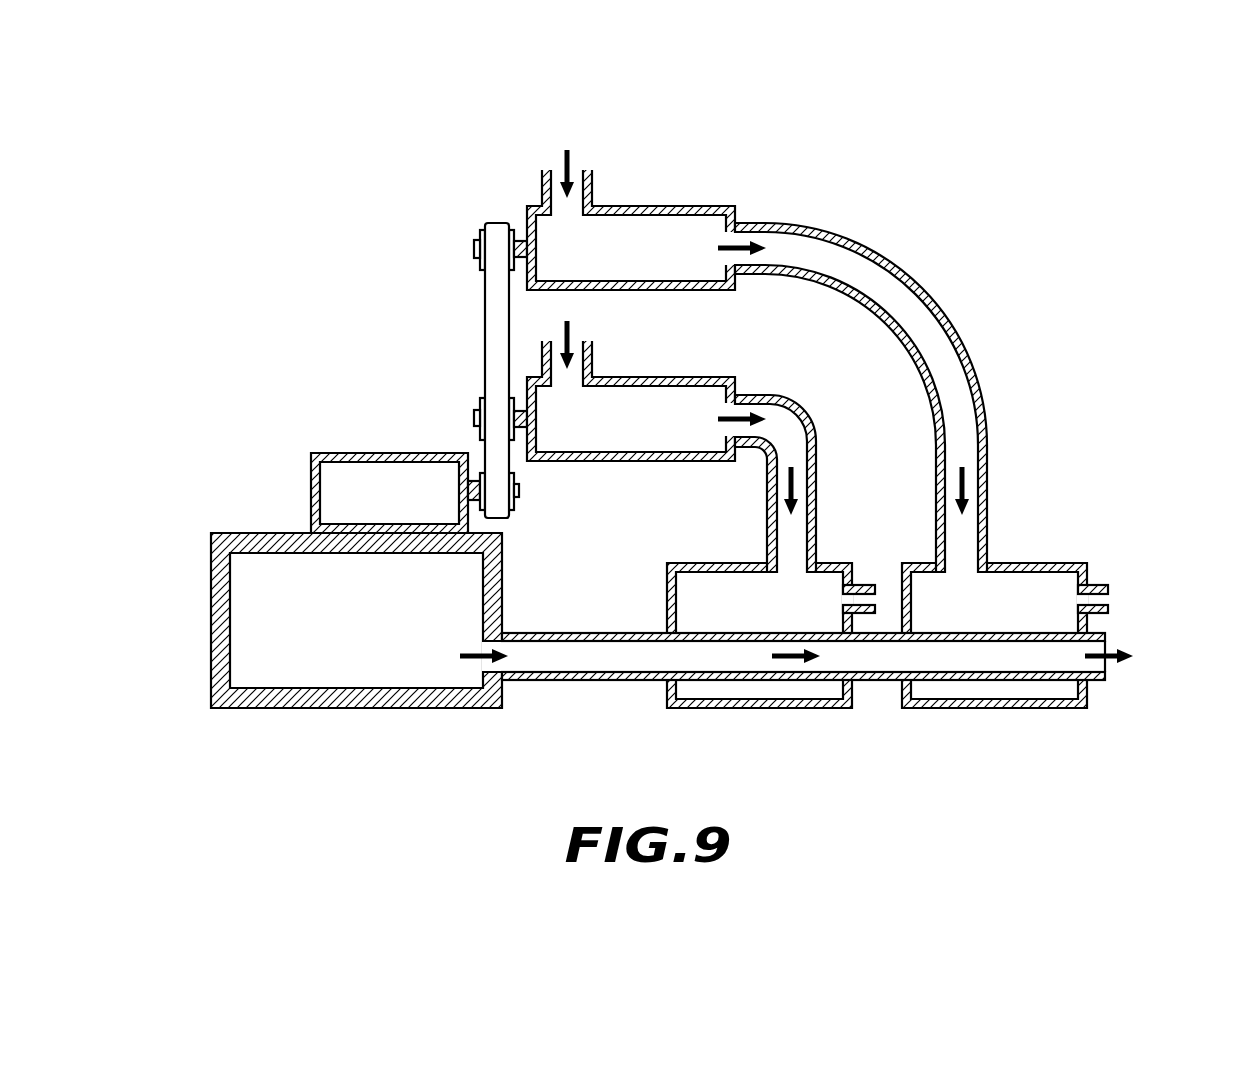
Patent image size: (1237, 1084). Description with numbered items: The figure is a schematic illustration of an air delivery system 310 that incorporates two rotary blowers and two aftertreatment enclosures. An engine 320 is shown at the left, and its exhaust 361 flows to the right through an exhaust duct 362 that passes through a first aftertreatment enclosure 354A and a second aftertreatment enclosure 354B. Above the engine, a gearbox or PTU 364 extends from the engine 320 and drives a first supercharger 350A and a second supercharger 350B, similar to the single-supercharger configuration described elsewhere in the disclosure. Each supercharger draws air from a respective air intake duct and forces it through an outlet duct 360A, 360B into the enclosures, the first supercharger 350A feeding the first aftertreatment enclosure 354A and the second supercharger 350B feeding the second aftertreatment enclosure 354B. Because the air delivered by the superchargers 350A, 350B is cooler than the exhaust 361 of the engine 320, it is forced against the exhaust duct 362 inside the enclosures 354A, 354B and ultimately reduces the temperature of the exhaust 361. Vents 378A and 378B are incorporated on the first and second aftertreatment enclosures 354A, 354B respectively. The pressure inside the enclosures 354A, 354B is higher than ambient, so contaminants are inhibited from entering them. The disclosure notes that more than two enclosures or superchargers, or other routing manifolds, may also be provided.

The air delivery system 310 is at (704, 446).
The engine 320 is at (282, 572).
The gearbox or PTU 364 is at (341, 472).
The first supercharger 350A is at (670, 400).
The second supercharger 350B is at (670, 228).
The outlet duct 360A is at (806, 430).
The outlet duct 360B is at (937, 322).
The first aftertreatment enclosure 354A is at (688, 580).
The second aftertreatment enclosure 354B is at (1068, 580).
The vent 378A is at (863, 584).
The vent 378B is at (1110, 598).
The exhaust duct 362 is at (571, 633).
The exhaust 361 is at (636, 680).